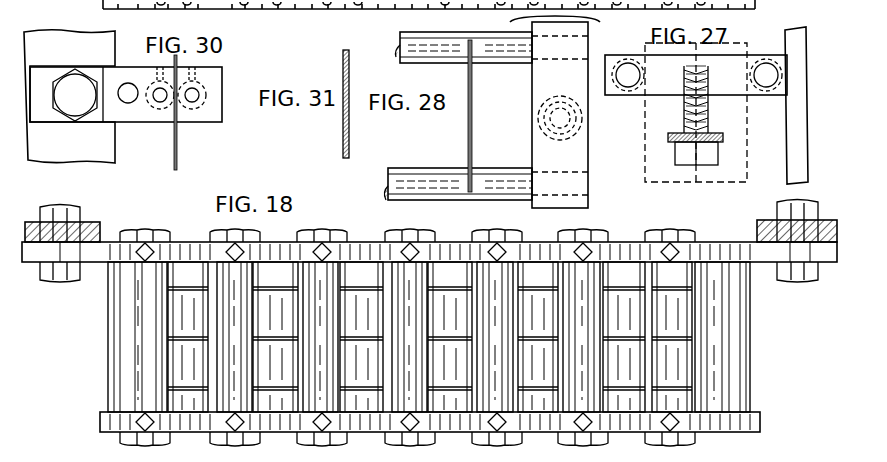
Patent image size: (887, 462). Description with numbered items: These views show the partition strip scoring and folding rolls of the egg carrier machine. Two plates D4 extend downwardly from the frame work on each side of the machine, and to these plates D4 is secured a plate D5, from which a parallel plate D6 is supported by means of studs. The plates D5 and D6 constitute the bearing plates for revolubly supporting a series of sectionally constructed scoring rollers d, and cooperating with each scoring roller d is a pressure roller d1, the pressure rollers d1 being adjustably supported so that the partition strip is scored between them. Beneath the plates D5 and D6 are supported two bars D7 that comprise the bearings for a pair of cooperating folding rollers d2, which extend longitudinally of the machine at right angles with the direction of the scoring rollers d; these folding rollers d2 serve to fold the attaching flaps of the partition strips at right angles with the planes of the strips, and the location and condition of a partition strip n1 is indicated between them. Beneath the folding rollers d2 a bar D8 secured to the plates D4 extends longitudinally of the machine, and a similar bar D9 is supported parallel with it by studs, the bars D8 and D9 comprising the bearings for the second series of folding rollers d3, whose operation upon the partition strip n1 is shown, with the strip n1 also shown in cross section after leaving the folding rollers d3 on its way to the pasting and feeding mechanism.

In FIG. 30, the plates D4 is at (69, 96).
In FIG. 28, the plates D4 is at (590, 22).
In FIG. 27, the plates D4 is at (807, 28).
In FIG. 18, the plates D4 is at (83, 223).
In FIG. 18, the plate D5 is at (753, 253).
In FIG. 18, the plate D6 is at (753, 420).
In FIG. 28, the bars D7 is at (580, 160).
In FIG. 27, the bars D7 is at (696, 112).
In FIG. 30, the bar D8 is at (38, 113).
In FIG. 30, the bar D9 is at (128, 113).
In FIG. 18, the scoring rollers d is at (180, 403).
In FIG. 18, the pressure roller d1 is at (573, 403).
In FIG. 28, the folding rollers d2 is at (487, 58).
In FIG. 27, the folding rollers d2 is at (624, 83).
In FIG. 30, the folding rollers d3 is at (168, 102).
In FIG. 30, the partition strip n1 is at (178, 137).
In FIG. 31, the partition strip n1 is at (343, 140).
In FIG. 28, the partition strip n1 is at (472, 102).
In FIG. 27, the partition strip n1 is at (708, 174).